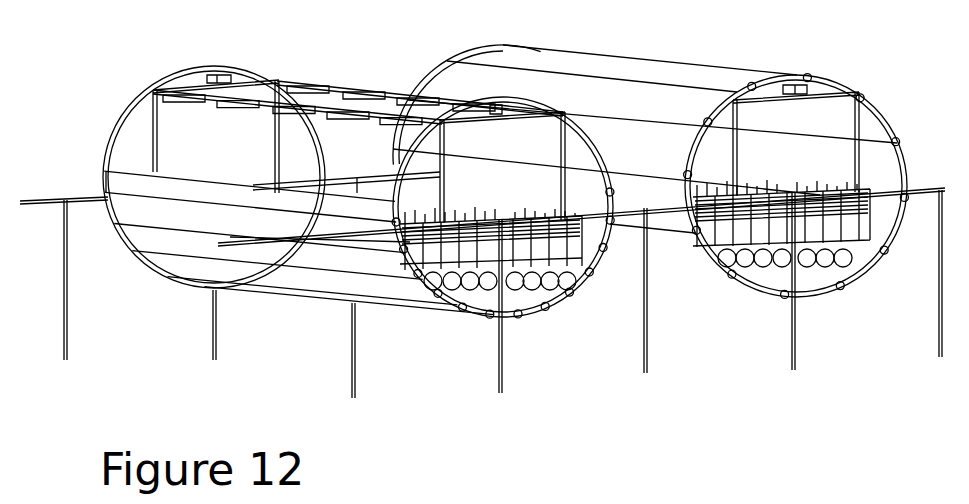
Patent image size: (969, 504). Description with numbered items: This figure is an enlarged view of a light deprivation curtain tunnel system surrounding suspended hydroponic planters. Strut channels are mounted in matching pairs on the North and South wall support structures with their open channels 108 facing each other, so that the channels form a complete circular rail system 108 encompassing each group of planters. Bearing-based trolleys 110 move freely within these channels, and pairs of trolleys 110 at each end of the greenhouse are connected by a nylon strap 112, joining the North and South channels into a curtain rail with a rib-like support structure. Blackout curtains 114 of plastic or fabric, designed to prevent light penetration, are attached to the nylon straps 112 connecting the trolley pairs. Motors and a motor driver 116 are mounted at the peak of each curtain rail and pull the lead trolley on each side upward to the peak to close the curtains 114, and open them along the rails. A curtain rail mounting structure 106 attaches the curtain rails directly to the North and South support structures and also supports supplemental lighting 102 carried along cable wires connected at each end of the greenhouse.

The supplemental lighting 102 is at (380, 92).
The curtain rail mounting structure 106 is at (267, 80).
The circular rail system 108 is at (163, 80).
The trolleys 110 is at (728, 280).
The nylon strap 112 is at (847, 277).
The blackout curtains 114 is at (650, 68).
The motors and motor driver 116 is at (218, 77).